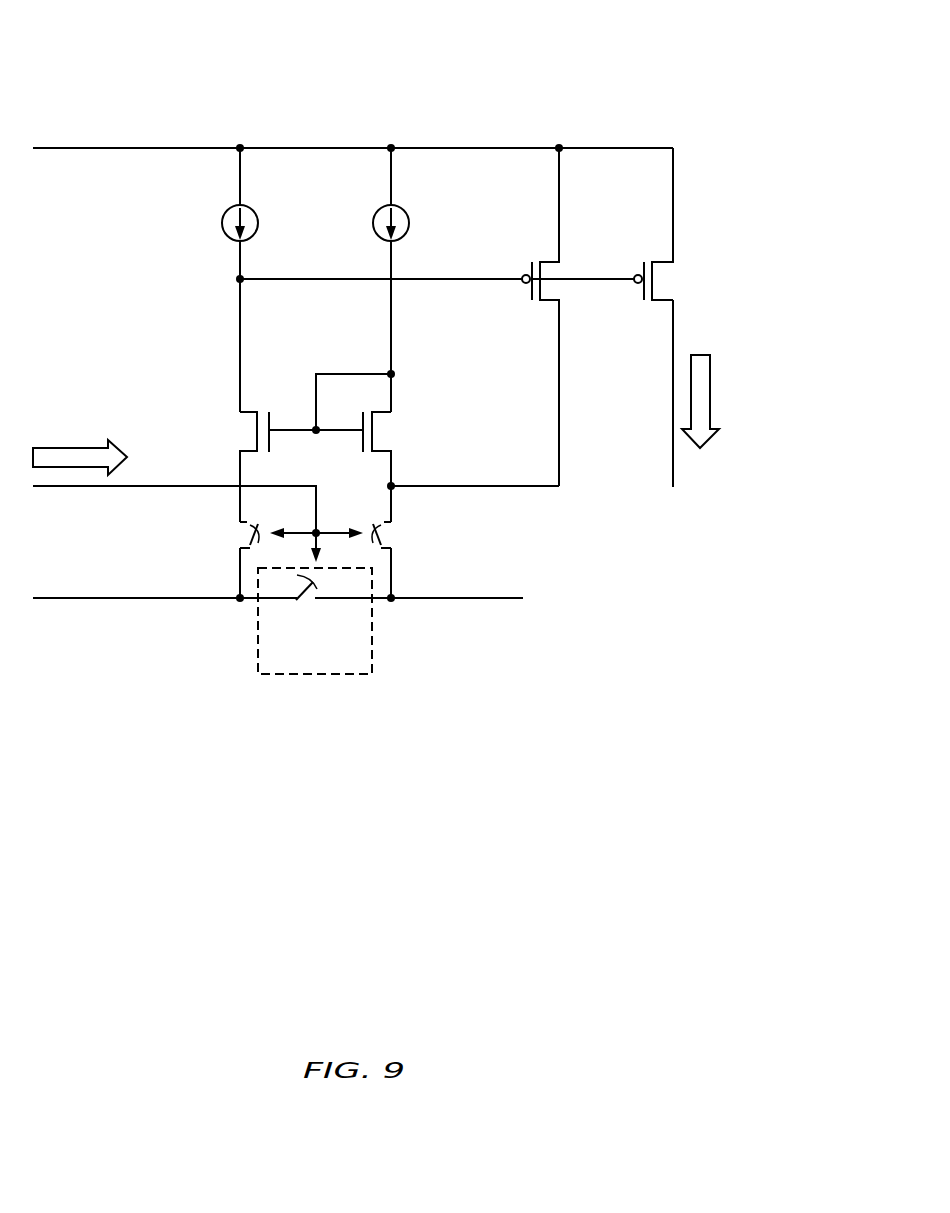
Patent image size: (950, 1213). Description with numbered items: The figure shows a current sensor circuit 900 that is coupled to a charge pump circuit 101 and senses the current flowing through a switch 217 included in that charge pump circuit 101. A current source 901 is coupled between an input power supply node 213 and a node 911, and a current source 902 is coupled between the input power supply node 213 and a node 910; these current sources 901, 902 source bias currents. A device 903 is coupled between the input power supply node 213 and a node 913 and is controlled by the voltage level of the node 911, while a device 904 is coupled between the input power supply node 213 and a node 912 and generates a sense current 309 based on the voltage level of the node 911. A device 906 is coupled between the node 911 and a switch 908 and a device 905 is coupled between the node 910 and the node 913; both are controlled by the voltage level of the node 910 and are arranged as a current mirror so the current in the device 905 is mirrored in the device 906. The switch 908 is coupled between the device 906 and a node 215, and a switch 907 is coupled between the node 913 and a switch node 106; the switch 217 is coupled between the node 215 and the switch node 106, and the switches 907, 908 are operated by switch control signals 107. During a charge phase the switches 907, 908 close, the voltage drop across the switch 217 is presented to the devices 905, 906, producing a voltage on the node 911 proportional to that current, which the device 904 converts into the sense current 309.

The current sensor circuit 900 is at (582, 68).
The input power supply node 213 is at (353, 124).
The current source 901 is at (260, 215).
The current source 902 is at (410, 215).
The device 903 is at (537, 302).
The device 904 is at (676, 277).
The device 905 is at (393, 428).
The device 906 is at (241, 433).
The switch 907 is at (391, 531).
The switch 908 is at (236, 535).
The node 910 is at (393, 327).
The node 911 is at (238, 318).
The node 912 is at (672, 396).
The node 913 is at (504, 486).
The switch control signals 107 is at (80, 446).
The sense current 309 is at (713, 393).
The node 215 is at (141, 600).
The switch 217 is at (307, 601).
The switch node 106 is at (384, 586).
The charge pump circuit 101 is at (320, 683).